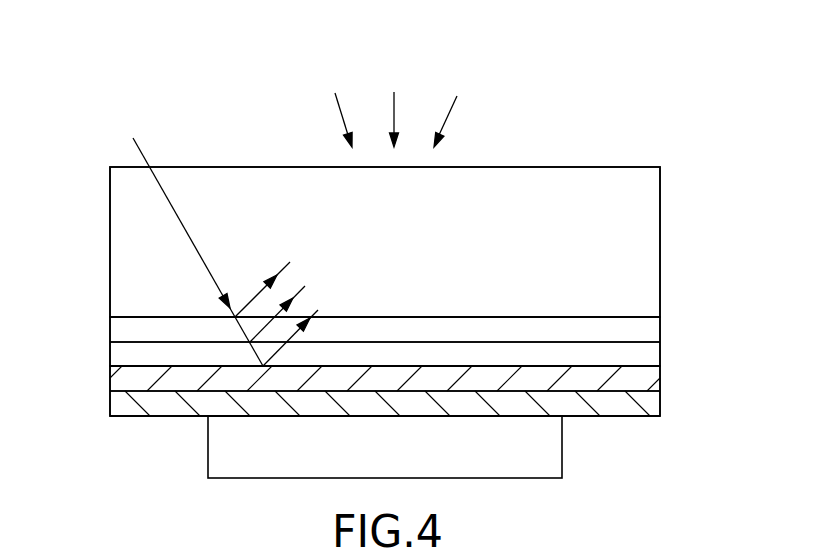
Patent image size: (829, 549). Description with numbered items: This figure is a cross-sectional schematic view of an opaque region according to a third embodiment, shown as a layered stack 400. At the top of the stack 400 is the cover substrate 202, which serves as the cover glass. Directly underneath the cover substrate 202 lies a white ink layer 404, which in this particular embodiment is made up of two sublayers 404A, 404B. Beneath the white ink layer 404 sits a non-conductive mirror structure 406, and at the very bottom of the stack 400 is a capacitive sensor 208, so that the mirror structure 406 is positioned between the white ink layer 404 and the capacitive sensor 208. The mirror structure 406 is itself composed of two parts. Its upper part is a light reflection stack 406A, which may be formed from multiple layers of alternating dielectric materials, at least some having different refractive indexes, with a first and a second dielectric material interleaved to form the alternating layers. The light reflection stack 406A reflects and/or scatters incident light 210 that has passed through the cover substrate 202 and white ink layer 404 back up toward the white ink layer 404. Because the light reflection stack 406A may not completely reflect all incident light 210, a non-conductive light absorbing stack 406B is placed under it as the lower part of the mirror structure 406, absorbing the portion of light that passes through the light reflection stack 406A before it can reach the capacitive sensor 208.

The stack 400 is at (84, 135).
The incident light 210 is at (440, 71).
The cover substrate 202 is at (403, 278).
The white ink layer 404 is at (103, 318).
The sublayer 404A is at (657, 327).
The sublayer 404B is at (657, 351).
The non-conductive mirror structure 406 is at (103, 368).
The light reflection stack 406A is at (657, 376).
The non-conductive light absorbing stack 406B is at (657, 400).
The capacitive sensor 208 is at (403, 471).